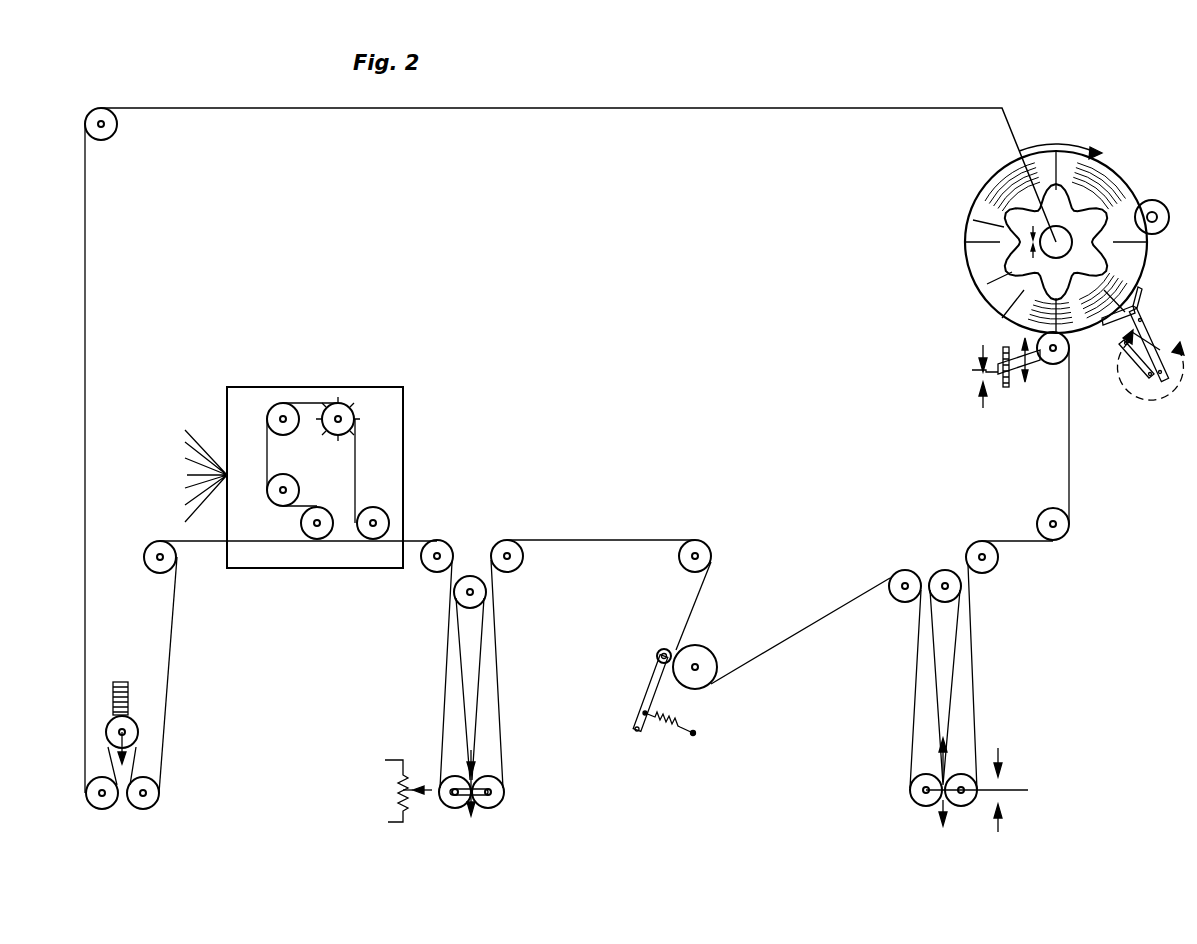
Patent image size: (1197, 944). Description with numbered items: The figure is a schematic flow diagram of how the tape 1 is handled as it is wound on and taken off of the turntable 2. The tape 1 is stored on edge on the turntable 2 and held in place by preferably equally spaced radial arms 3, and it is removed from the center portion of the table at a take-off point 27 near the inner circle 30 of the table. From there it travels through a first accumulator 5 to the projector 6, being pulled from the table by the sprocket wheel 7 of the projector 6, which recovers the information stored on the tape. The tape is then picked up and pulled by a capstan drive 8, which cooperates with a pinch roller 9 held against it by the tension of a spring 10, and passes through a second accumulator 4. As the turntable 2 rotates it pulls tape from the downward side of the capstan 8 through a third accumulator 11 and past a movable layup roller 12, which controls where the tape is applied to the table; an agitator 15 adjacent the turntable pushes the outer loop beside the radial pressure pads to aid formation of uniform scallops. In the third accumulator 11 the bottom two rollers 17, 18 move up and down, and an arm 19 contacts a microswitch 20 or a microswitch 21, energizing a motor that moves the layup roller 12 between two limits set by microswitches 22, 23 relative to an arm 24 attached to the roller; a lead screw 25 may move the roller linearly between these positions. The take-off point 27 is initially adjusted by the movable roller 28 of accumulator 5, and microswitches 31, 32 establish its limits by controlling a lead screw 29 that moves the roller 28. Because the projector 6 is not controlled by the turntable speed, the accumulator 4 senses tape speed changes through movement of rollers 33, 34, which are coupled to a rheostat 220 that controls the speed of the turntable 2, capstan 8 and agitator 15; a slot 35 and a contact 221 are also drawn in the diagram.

The tape 1 is at (790, 110).
The turntable 2 is at (1108, 172).
The radial arms 3 is at (995, 183).
The second accumulator 4 is at (478, 855).
The accumulator 5 is at (134, 845).
The projector 6 is at (320, 387).
The sprocket wheel 7 is at (353, 414).
The capstan drive 8 is at (708, 652).
The pinch roller 9 is at (657, 655).
The spring 10 is at (665, 735).
The third accumulator 11 is at (946, 867).
The layup roller 12 is at (1053, 364).
The agitator 15 is at (1166, 430).
The bottom roller 17 is at (917, 805).
The bottom roller 18 is at (966, 803).
The arm 19 is at (1010, 786).
The microswitch 20 is at (1002, 758).
The microswitch 21 is at (1002, 826).
The microswitch 22 is at (978, 352).
The microswitch 23 is at (978, 406).
The arm 24 is at (972, 371).
The lead screw 25 is at (1006, 388).
The take-off point 27 is at (987, 284).
The movable roller 28 is at (133, 724).
The lead screw 29 is at (128, 690).
The inner circle 30 is at (1056, 242).
The microswitch 31 is at (974, 219).
The microswitch 32 is at (1037, 258).
The roller 33 is at (447, 808).
The roller 34 is at (500, 803).
The slot 35 is at (480, 800).
The rheostat 220 is at (402, 787).
The slider contact 221 is at (430, 788).